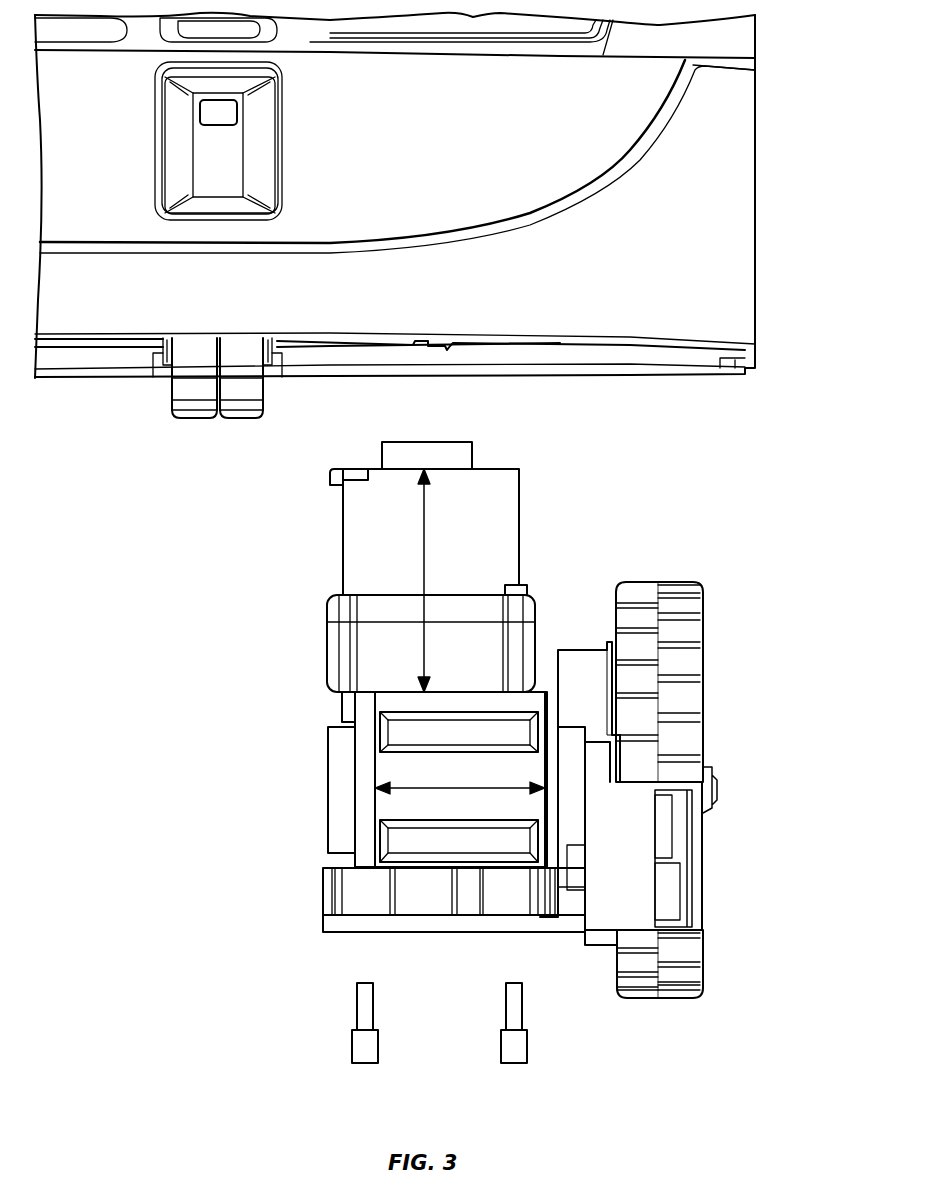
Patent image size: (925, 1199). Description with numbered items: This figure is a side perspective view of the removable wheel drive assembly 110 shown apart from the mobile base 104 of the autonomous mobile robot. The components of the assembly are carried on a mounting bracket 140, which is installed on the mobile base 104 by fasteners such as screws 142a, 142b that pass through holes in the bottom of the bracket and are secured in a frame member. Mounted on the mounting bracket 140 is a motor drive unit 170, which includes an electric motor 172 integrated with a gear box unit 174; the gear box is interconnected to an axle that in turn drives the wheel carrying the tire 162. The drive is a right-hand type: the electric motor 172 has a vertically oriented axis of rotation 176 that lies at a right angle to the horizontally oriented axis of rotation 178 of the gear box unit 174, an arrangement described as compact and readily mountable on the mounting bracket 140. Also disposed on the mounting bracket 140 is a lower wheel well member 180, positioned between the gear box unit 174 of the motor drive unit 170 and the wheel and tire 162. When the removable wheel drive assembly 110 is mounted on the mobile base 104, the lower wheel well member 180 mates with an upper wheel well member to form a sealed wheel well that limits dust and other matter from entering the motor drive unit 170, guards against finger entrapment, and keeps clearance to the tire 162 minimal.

The mobile base 104 is at (764, 286).
The removable wheel drive assembly 110 is at (592, 515).
The mounting bracket 140 is at (340, 890).
The fastener 142a is at (352, 1045).
The fastener 142b is at (501, 1045).
The tire 162 is at (705, 660).
The motor drive unit 170 is at (300, 651).
The electric motor 172 is at (362, 500).
The gear box unit 174 is at (375, 830).
The vertically oriented axis of rotation 176 is at (424, 545).
The horizontally oriented axis of rotation 178 is at (457, 788).
The lower wheel well member 180 is at (594, 948).